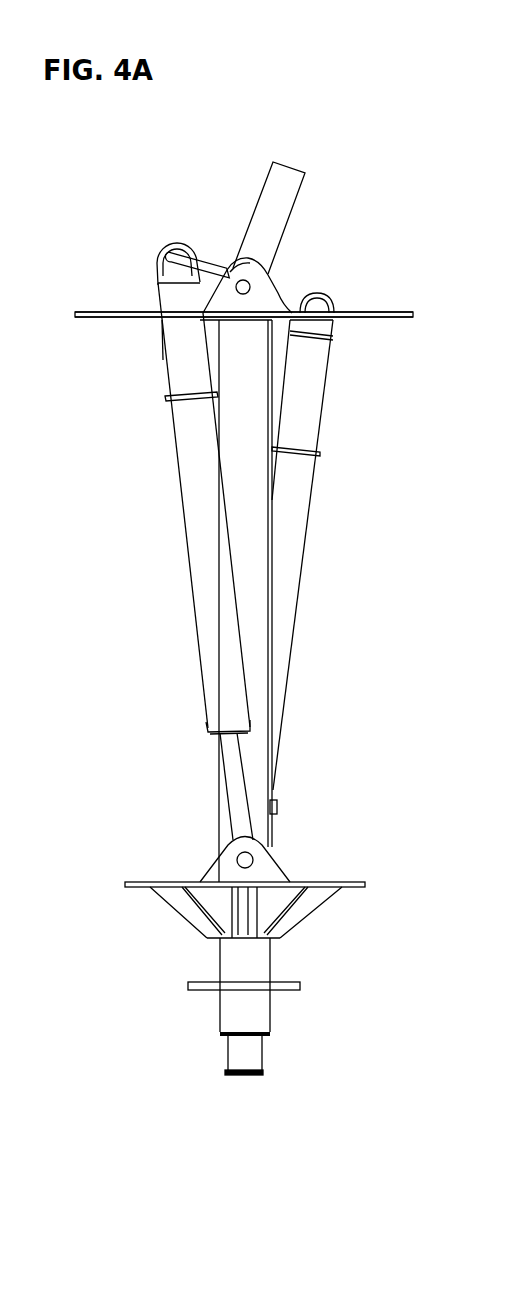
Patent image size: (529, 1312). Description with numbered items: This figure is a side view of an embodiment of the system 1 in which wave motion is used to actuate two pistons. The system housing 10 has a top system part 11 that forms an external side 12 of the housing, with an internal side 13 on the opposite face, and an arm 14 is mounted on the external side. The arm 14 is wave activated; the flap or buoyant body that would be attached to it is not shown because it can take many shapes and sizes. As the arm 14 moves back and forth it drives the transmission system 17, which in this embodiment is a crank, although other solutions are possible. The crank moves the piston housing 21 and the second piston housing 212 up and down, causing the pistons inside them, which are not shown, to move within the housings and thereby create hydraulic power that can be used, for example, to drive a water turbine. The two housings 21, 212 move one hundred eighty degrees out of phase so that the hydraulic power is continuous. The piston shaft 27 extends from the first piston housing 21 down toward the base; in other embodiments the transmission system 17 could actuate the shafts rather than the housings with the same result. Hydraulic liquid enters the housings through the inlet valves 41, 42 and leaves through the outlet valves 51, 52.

The system 1 is at (238, 115).
The system housing 10 is at (153, 948).
The top system part 11 is at (351, 308).
The external side 12 is at (399, 311).
The internal side 13 is at (398, 320).
The arm 14 is at (306, 173).
The transmission system 17 is at (214, 262).
The piston housing 21 is at (180, 518).
The second piston housing 212 is at (306, 542).
The piston shaft 27 is at (228, 800).
The inlet valve 41 is at (167, 392).
The inlet valve 42 is at (278, 432).
The outlet valve 51 is at (214, 380).
The outlet valve 52 is at (318, 438).